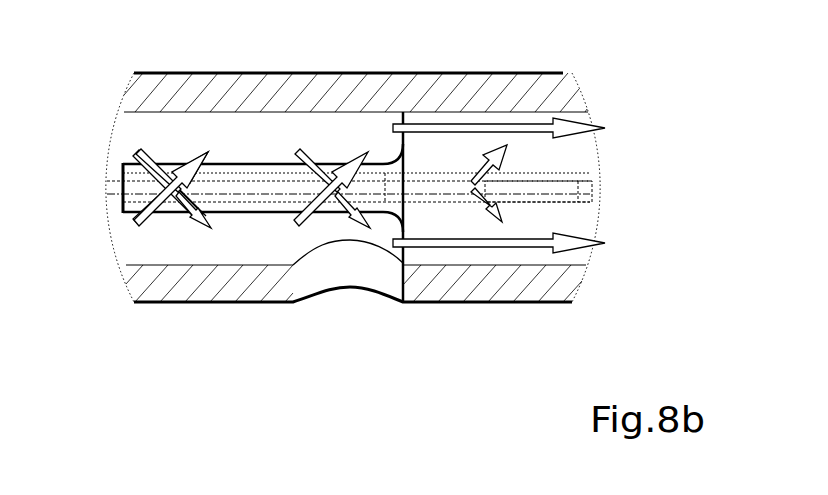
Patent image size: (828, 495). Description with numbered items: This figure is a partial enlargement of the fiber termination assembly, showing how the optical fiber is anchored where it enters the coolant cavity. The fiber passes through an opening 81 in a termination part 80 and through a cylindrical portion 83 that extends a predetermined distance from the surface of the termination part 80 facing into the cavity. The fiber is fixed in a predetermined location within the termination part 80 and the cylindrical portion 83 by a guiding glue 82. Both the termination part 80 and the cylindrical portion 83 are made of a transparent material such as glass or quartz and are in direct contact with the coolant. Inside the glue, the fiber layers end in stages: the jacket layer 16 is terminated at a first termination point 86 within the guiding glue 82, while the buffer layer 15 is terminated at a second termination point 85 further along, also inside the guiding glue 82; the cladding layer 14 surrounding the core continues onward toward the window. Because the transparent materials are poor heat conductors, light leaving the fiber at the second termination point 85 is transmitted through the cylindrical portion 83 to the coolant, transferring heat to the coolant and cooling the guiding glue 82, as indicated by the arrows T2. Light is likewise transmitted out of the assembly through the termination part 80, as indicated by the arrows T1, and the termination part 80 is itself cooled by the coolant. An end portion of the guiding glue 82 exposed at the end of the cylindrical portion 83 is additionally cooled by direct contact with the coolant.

The cladding layer 14 is at (117, 188).
The buffer layer 15 is at (530, 187).
The jacket layer 16 is at (587, 187).
The termination part 80 is at (455, 153).
The opening 81 is at (599, 173).
The guiding glue 82 is at (573, 198).
The cylindrical portion 83 is at (233, 210).
The second termination point 85 is at (473, 195).
The first termination point 86 is at (583, 187).
The arrows T1 is at (583, 128).
The arrows T2 is at (183, 160).